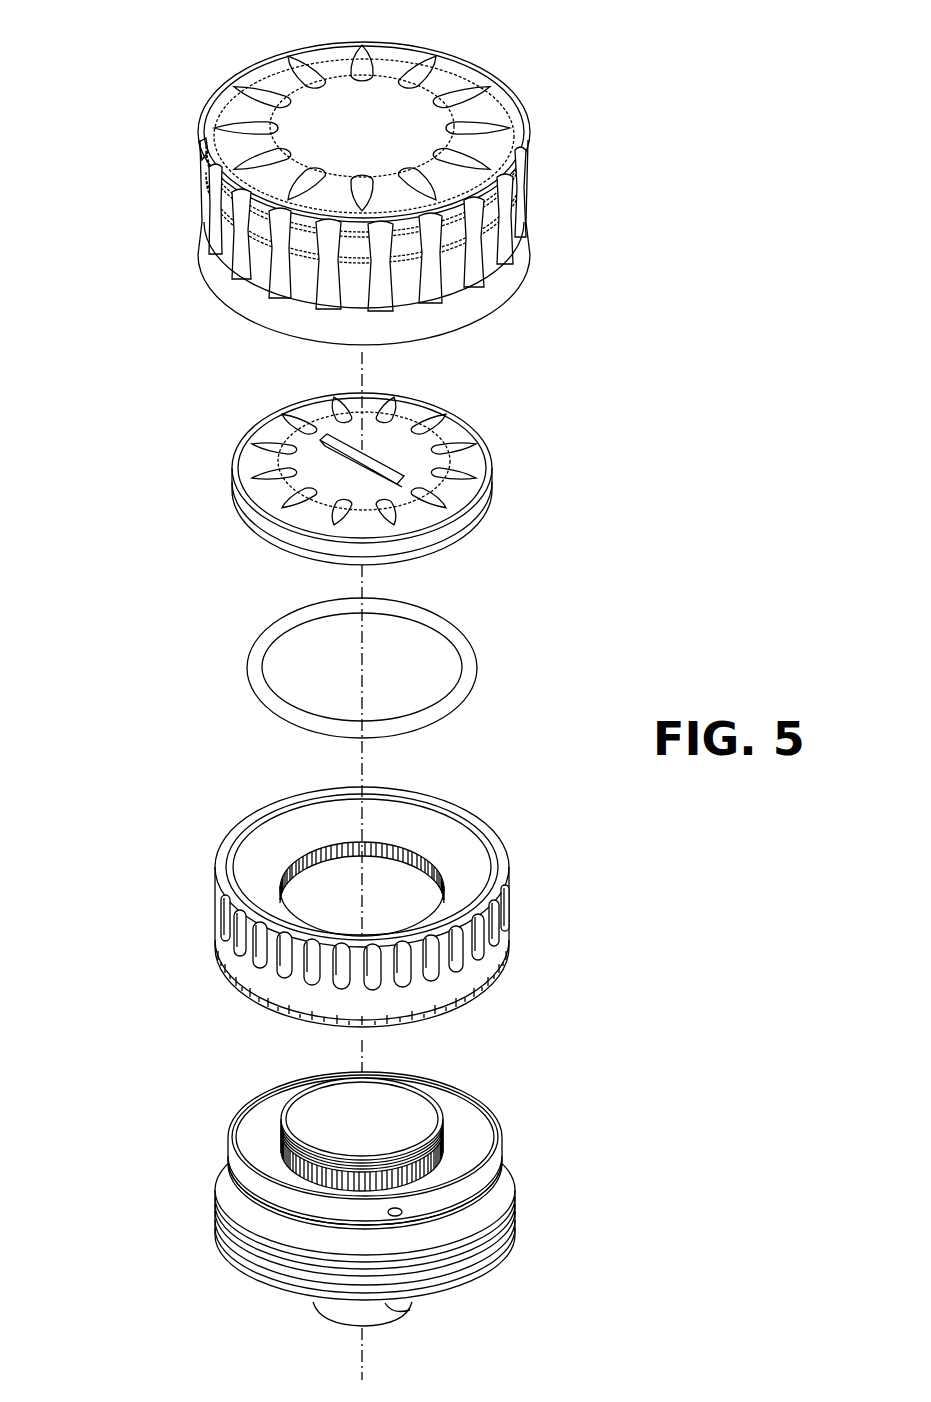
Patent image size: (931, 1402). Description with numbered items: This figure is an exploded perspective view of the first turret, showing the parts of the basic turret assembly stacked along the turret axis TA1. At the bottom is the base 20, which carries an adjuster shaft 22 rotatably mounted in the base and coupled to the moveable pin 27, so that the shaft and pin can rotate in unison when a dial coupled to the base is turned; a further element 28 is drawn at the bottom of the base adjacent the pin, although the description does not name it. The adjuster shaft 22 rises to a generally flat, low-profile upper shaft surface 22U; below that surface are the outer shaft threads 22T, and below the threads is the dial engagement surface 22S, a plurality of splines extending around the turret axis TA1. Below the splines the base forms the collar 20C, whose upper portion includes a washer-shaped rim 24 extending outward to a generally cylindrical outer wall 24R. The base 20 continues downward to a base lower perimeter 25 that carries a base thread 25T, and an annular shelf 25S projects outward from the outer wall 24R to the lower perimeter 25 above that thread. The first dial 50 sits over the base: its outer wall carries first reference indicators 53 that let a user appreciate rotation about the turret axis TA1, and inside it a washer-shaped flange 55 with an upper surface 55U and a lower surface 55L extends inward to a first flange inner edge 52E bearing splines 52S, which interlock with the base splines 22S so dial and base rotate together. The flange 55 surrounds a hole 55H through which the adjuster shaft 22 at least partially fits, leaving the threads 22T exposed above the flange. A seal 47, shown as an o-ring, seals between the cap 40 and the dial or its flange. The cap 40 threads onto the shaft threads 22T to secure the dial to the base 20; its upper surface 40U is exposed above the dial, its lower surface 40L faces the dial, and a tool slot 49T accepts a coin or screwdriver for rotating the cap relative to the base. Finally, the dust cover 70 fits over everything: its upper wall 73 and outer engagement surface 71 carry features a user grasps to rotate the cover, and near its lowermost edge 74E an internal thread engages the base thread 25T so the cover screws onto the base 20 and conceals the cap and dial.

The dust cover 70 is at (315, 176).
The outer engagement surface 71 is at (203, 152).
The upper wall 73 is at (283, 76).
The lowermost edge 74E is at (237, 305).
The cap 40 is at (342, 461).
The upper surface 40U is at (425, 462).
The lower surface 40L is at (478, 522).
The tool slot 49T is at (380, 458).
The seal 47 is at (468, 660).
The first dial 50 is at (349, 895).
The first flange inner edge 52E is at (420, 844).
The splines 52S is at (425, 865).
The flange 55 is at (254, 872).
The upper surface 55U is at (470, 880).
The hole 55H is at (413, 911).
The lower surface 55L is at (512, 902).
The first reference indicators 53 is at (292, 1004).
The base 20 is at (344, 1202).
The collar 20C is at (208, 1200).
The adjuster shaft 22 is at (435, 1122).
The upper shaft surface 22U is at (420, 1125).
The outer shaft threads 22T is at (432, 1160).
The dial engagement surface 22S is at (440, 1165).
The rim 24 is at (323, 1150).
The outer wall 24R is at (232, 1176).
The base lower perimeter 25 is at (307, 1206).
The shelf 25S is at (226, 1205).
The base thread 25T is at (228, 1262).
The moveable pin 27 is at (386, 1318).
The dome 28 is at (335, 1320).
The turret axis TA1 is at (365, 1347).